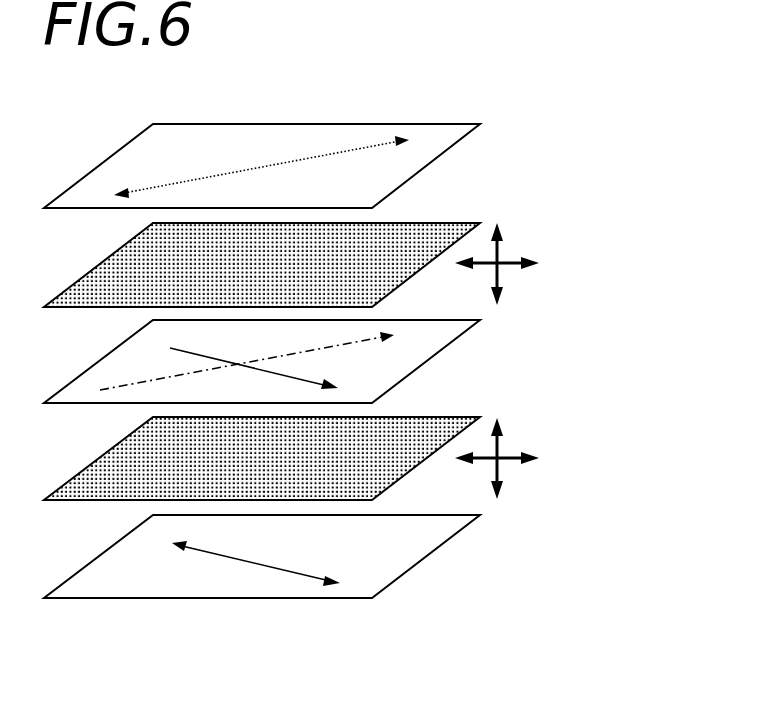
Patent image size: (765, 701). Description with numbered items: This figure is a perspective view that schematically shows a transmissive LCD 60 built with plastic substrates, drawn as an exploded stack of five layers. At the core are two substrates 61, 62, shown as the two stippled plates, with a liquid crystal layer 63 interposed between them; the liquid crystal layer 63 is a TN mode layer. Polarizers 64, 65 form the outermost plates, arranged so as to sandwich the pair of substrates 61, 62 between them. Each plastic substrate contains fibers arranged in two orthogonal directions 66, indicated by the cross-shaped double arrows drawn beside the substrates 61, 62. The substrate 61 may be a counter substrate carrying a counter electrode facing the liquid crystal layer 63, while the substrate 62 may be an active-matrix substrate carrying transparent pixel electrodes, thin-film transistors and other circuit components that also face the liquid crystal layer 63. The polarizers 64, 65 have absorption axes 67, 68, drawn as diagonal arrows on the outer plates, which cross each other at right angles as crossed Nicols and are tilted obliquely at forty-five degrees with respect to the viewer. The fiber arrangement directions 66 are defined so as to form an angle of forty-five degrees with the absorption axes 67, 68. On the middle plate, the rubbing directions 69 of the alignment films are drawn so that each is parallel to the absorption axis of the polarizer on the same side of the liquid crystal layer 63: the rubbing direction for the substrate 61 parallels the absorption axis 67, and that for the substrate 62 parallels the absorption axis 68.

The transmissive LCD 60 is at (583, 127).
The substrate 61 is at (80, 277).
The substrate 62 is at (85, 470).
The liquid crystal layer 63 is at (83, 377).
The polarizer 64 is at (103, 160).
The polarizer 65 is at (85, 565).
The fiber arrangement directions 66 is at (509, 354).
The absorption axis 67 is at (342, 145).
The absorption axis 68 is at (302, 580).
The rubbing directions 69 is at (303, 382).